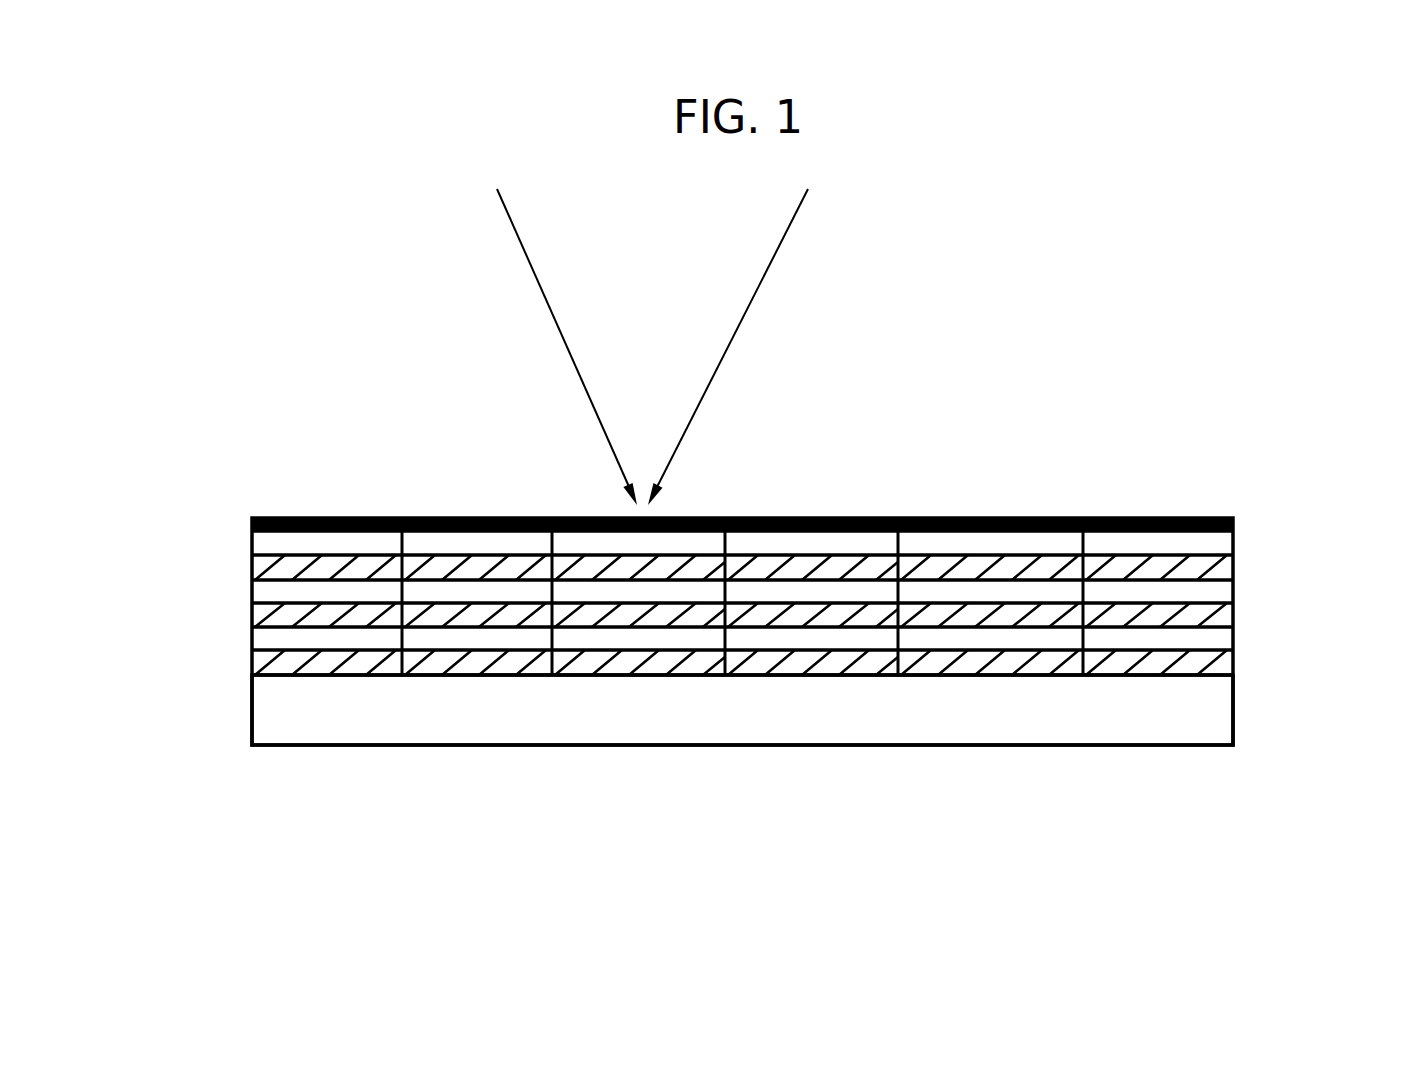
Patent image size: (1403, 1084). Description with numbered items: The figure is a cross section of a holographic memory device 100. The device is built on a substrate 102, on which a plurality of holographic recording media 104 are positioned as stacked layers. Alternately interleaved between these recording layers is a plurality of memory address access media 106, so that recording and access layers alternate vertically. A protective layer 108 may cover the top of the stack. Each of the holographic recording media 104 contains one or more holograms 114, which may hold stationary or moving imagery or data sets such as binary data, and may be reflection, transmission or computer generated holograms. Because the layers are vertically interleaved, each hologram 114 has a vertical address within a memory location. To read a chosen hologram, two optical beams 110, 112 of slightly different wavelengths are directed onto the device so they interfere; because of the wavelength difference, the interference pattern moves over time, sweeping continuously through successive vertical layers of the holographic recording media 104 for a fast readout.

The holographic memory device 100 is at (1150, 812).
The substrate 102 is at (250, 725).
The holographic recording media 104 is at (252, 662).
The memory address access media 106 is at (1233, 548).
The protective layer 108 is at (358, 518).
The optical beam 110 is at (512, 229).
The optical beam 112 is at (788, 227).
The hologram 114 is at (932, 567).